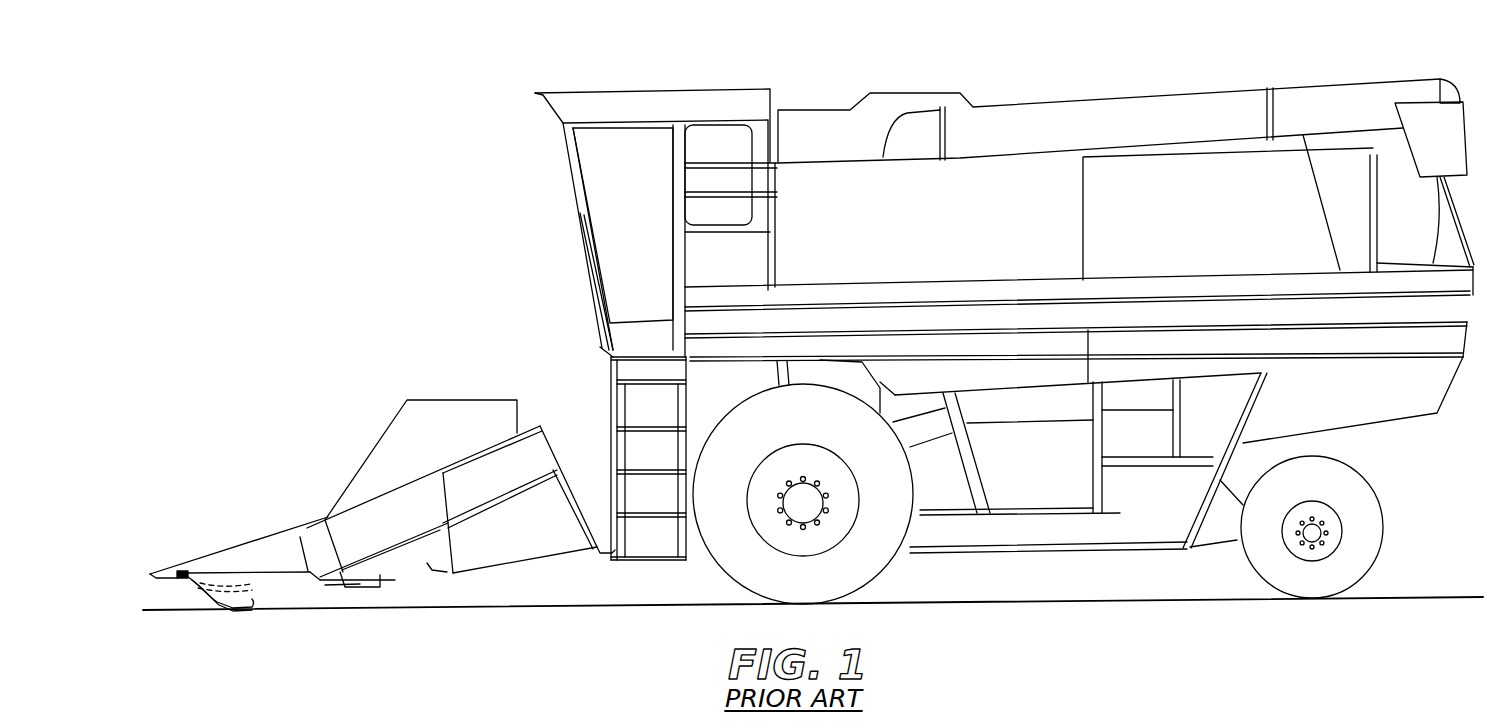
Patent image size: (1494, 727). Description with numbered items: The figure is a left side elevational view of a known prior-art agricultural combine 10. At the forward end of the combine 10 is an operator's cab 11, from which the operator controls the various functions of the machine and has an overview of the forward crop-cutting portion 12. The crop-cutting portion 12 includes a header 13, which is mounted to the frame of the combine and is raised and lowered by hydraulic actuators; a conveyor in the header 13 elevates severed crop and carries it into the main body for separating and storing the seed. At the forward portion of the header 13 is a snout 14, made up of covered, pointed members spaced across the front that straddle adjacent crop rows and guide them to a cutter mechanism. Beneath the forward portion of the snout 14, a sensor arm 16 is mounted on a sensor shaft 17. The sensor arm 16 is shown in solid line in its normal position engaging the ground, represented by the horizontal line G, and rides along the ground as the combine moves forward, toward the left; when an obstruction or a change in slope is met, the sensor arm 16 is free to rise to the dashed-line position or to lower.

The agricultural combine 10 is at (1064, 84).
The operator's cab 11 is at (607, 80).
The crop-cutting portion 12 is at (272, 512).
The header 13 is at (450, 390).
The snout 14 is at (229, 541).
The sensor arm 16 is at (208, 606).
The sensor shaft 17 is at (183, 578).
The ground G is at (303, 612).